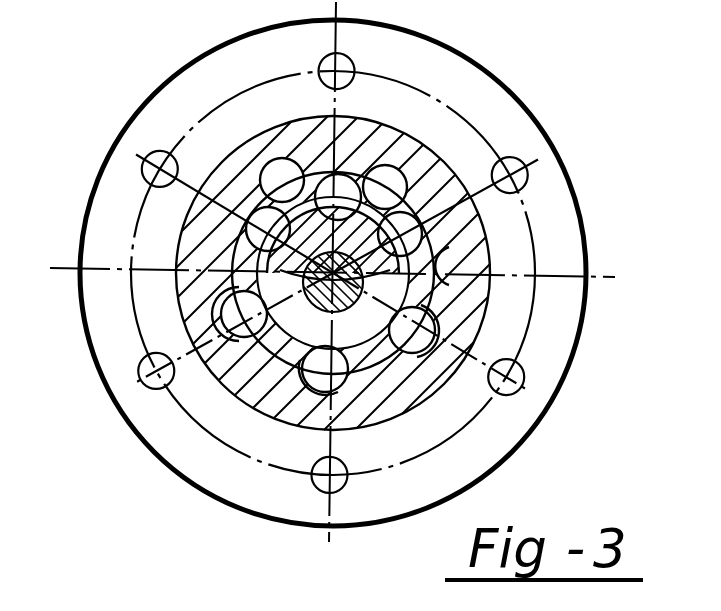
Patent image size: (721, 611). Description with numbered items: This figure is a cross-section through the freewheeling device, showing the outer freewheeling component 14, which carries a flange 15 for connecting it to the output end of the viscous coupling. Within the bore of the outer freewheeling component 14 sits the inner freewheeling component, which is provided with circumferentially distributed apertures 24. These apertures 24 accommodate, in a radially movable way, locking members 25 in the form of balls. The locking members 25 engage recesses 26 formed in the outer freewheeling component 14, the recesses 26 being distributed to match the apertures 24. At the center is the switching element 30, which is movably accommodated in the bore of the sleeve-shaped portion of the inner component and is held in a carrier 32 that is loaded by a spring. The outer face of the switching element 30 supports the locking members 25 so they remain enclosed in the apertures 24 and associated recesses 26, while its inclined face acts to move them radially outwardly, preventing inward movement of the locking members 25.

The outer freewheeling component 14 is at (239, 160).
The flange 15 is at (505, 136).
The apertures 24 is at (418, 207).
The locking members 25 is at (425, 288).
The recesses 26 is at (396, 176).
The switching element 30 is at (388, 383).
The carrier 32 is at (362, 360).